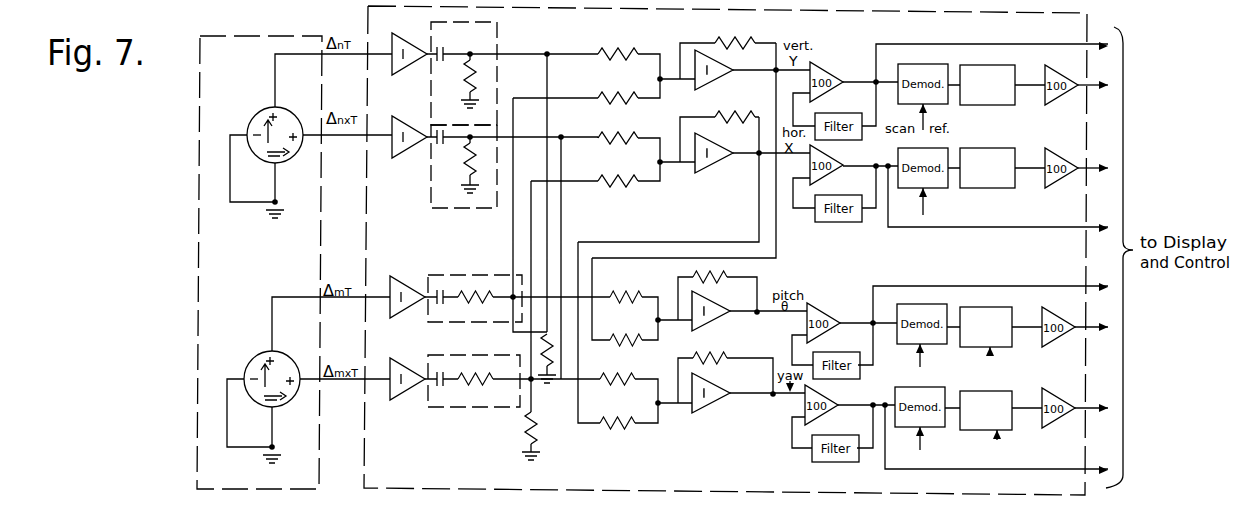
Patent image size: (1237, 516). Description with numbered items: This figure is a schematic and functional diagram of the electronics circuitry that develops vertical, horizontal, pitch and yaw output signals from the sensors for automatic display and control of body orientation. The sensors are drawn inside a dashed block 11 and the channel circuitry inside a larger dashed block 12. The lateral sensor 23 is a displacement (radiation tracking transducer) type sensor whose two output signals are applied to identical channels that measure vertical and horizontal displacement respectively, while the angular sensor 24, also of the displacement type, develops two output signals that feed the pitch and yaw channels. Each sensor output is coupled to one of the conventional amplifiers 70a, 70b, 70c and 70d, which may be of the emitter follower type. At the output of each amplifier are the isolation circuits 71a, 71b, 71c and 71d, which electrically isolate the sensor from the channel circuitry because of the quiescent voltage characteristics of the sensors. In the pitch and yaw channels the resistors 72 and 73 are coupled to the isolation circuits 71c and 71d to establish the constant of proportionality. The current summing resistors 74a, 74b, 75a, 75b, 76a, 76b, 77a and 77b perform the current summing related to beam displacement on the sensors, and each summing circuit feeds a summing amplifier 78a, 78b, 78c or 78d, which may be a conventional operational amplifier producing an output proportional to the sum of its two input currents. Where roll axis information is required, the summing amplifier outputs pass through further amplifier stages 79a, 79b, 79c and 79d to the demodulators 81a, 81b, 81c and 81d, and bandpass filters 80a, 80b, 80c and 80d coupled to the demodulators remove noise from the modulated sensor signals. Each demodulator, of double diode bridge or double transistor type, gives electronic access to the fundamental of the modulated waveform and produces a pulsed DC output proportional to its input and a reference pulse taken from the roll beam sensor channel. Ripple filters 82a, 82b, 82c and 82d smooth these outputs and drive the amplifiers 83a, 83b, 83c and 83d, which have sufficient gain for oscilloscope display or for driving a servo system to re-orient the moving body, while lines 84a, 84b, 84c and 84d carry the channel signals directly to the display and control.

The sensor unit 11 is at (288, 34).
The signal processing unit 12 is at (368, 8).
The lateral sensor 23 is at (259, 113).
The angular sensor 24 is at (256, 356).
The amplifier 70a is at (413, 28).
The amplifier 70b is at (405, 128).
The amplifier 70c is at (405, 286).
The amplifier 70d is at (409, 356).
The isolation circuit 71a is at (497, 50).
The isolation circuit 71b is at (490, 209).
The isolation circuit 71c is at (455, 277).
The isolation circuit 71d is at (458, 407).
The resistor 72 is at (538, 350).
The resistor 73 is at (539, 438).
The current summing resistor 74a is at (600, 54).
The current summing resistor 74b is at (634, 96).
The current summing resistor 75a is at (629, 150).
The current summing resistor 75b is at (635, 185).
The current summing resistor 76a is at (630, 286).
The current summing resistor 76b is at (631, 329).
The current summing resistor 77a is at (621, 380).
The current summing resistor 77b is at (621, 422).
The summing amplifier 78a is at (716, 76).
The summing amplifier 78b is at (718, 166).
The summing amplifier 78c is at (719, 316).
The summing amplifier 78d is at (716, 405).
The gain amplifier 79a is at (834, 77).
The gain amplifier 79b is at (854, 164).
The gain amplifier 79c is at (824, 314).
The gain amplifier 79d is at (821, 411).
The bandpass filter 80a is at (858, 106).
The bandpass filter 80b is at (851, 231).
The bandpass filter 80c is at (855, 377).
The bandpass filter 80d is at (854, 462).
The demodulator 81a is at (929, 88).
The demodulator 81b is at (934, 187).
The demodulator 81c is at (921, 312).
The demodulator 81d is at (934, 427).
The ripple filter 82a is at (1007, 73).
The ripple filter 82b is at (996, 155).
The ripple filter 82c is at (994, 340).
The ripple filter 82d is at (993, 427).
The amplifier 83a is at (1075, 66).
The amplifier 83b is at (1062, 164).
The amplifier 83c is at (1053, 341).
The amplifier 83d is at (1053, 427).
The bypass output line 84a is at (933, 43).
The bypass output line 84b is at (968, 227).
The bypass output line 84c is at (1004, 279).
The bypass output line 84d is at (998, 472).